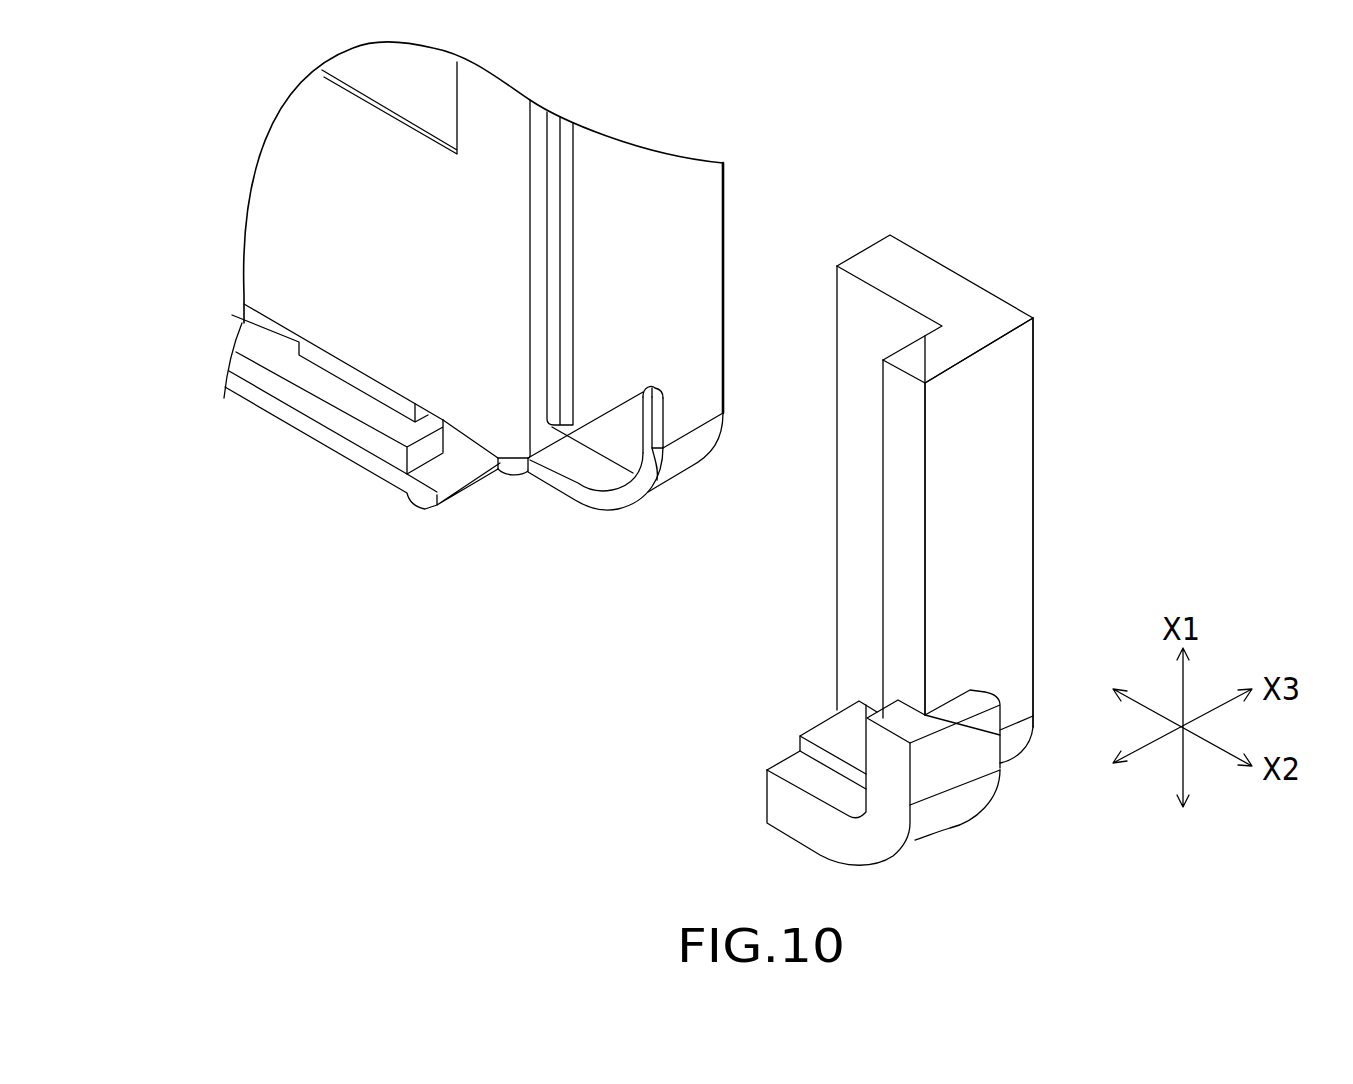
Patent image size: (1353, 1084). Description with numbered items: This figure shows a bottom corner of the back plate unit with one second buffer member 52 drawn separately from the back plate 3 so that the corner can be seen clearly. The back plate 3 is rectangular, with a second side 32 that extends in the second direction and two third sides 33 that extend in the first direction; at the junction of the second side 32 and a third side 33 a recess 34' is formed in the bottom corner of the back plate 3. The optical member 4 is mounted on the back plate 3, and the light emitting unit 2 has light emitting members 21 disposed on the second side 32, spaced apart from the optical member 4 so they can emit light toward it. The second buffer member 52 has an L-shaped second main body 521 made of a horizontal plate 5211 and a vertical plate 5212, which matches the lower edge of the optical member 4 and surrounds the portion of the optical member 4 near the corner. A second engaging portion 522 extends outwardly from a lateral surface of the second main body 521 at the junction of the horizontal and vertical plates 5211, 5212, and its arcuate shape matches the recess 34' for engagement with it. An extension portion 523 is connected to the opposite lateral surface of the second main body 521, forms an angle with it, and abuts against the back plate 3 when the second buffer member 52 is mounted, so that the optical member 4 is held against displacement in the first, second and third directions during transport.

The light emitting unit 2 is at (318, 375).
The light emitting member 21 is at (243, 320).
The back plate 3 is at (693, 230).
The second side 32 is at (310, 453).
The third side 33 is at (690, 267).
The recess 34' is at (550, 495).
The optical member 4 is at (318, 185).
The second buffer member 52 is at (1037, 492).
The second main body 521 is at (1076, 522).
The horizontal plate 5211 is at (997, 405).
The second engaging portion 522 is at (883, 835).
The extension portion 523 is at (918, 275).
The vertical plate 5212 is at (832, 733).